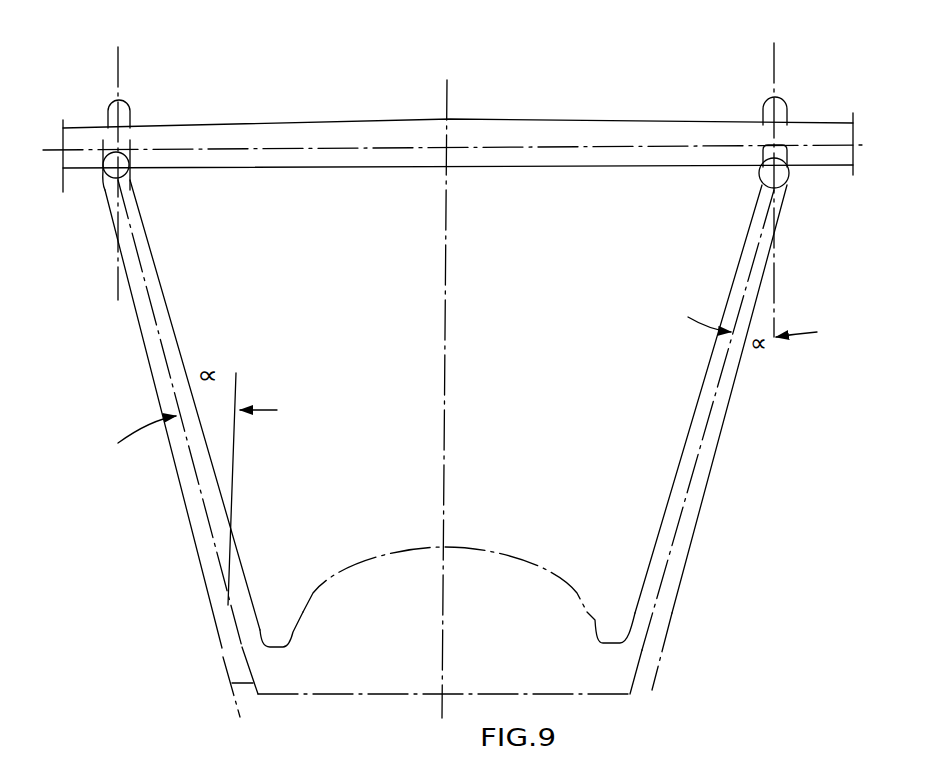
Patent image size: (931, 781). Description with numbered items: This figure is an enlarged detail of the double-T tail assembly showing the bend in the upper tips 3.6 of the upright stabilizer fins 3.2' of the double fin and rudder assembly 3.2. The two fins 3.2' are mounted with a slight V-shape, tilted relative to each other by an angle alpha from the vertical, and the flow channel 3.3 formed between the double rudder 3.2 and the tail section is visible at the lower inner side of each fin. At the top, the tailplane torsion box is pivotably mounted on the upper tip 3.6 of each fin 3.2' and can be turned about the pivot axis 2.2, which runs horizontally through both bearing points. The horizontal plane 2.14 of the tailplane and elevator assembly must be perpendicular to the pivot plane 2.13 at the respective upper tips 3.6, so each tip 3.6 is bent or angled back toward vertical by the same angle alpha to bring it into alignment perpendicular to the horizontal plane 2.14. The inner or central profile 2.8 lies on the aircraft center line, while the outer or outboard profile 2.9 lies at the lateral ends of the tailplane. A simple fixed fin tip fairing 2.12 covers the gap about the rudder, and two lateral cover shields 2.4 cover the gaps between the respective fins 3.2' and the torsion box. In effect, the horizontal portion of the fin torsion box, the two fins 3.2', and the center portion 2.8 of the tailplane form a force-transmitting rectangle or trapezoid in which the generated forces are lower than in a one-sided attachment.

The pivot axis 2.2 is at (158, 181).
The gap cover 2.4 is at (180, 413).
The inner or central profile 2.8 is at (448, 136).
The outer or outboard profile 2.9 is at (57, 90).
The fixed fin tip fairing 2.12 is at (128, 107).
The pivot plane 2.13 is at (126, 41).
The horizontal plane 2.14 is at (635, 145).
The double fin and rudder assembly 3.2 is at (720, 439).
The stabilizer fin 3.2' is at (437, 448).
The flow channel 3.3 is at (610, 606).
The upper tip 3.6 is at (103, 188).